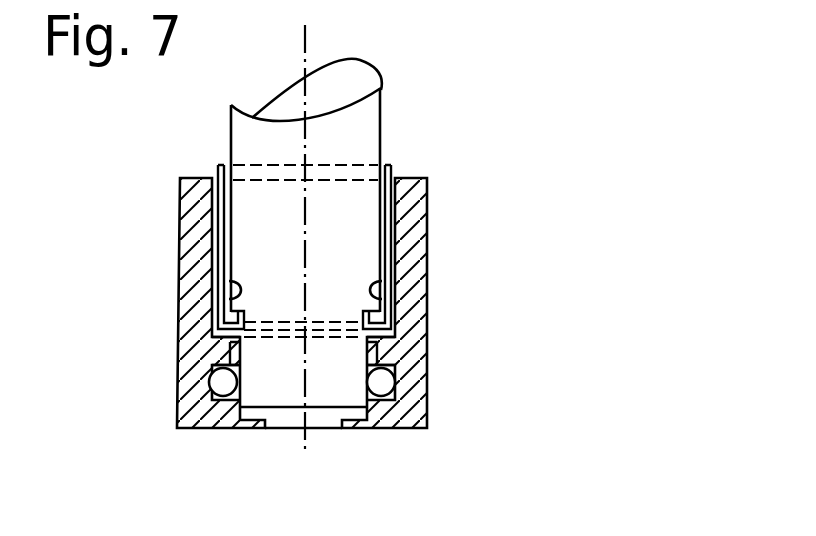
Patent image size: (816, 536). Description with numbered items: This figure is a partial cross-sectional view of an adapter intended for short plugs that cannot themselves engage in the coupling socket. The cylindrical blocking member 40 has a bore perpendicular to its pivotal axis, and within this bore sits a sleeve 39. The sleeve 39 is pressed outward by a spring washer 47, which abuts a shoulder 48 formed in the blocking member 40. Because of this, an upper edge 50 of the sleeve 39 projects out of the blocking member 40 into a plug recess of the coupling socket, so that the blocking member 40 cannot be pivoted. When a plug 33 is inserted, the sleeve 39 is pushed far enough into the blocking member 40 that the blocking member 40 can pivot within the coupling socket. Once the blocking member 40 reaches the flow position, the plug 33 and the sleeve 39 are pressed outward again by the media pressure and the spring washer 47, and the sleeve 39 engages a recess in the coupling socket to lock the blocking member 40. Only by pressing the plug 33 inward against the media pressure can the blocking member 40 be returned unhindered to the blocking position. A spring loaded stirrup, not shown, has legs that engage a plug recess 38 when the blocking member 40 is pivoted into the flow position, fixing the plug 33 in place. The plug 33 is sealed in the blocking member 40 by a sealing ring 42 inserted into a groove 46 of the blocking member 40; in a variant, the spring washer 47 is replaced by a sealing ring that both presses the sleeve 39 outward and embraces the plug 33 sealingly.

The plug 33 is at (373, 122).
The plug recess 38 is at (373, 297).
The sleeve 39 is at (393, 163).
The blocking member 40 is at (420, 217).
The sealing ring 42 is at (383, 381).
The groove 46 is at (405, 398).
The spring washer 47 is at (215, 334).
The shoulder 48 is at (222, 347).
The upper edge 50 is at (220, 163).